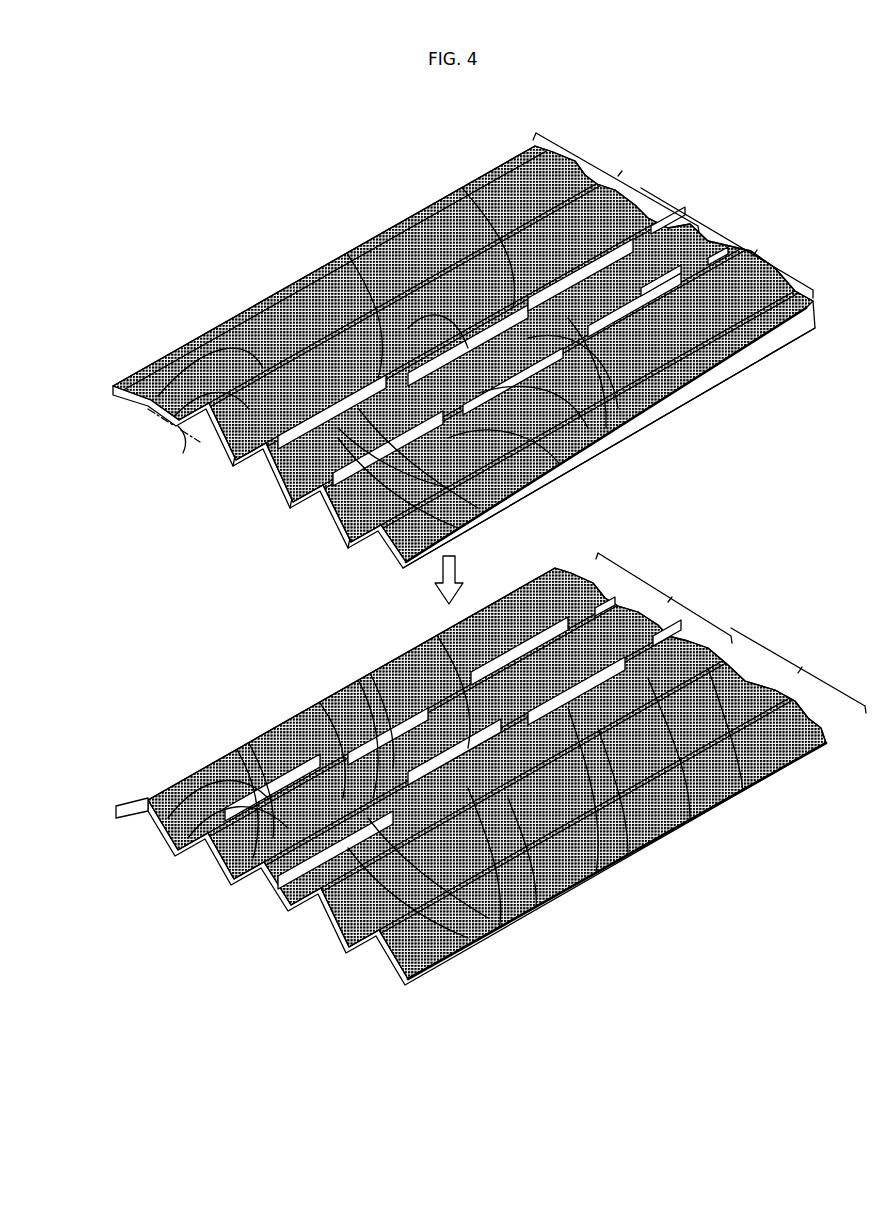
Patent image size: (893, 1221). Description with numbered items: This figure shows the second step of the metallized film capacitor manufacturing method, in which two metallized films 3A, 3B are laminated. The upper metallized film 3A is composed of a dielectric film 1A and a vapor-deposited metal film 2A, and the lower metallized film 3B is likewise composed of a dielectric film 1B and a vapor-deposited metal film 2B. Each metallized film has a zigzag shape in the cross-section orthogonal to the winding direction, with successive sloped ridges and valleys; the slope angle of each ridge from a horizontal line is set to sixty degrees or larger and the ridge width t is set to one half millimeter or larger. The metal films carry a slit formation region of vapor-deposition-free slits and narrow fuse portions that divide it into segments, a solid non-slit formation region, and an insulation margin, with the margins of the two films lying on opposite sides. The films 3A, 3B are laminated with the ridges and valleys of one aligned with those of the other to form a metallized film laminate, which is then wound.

The dielectric film 1A is at (140, 398).
The vapor-deposited metal film 2A is at (105, 386).
The metallized film 3A is at (164, 470).
The dielectric film 1B is at (150, 812).
The vapor-deposited metal film 2B is at (125, 812).
The metallized film 3B is at (185, 922).
The width of the ridge t is at (228, 462).